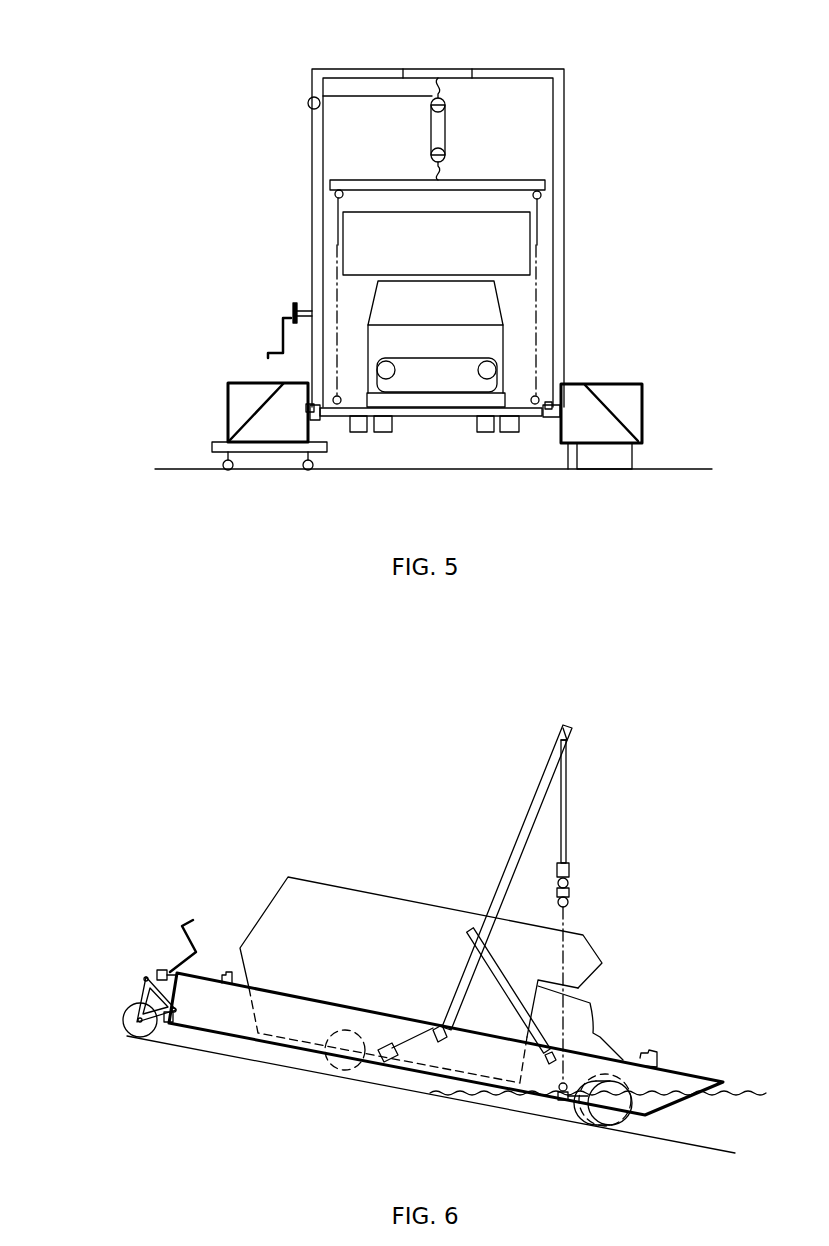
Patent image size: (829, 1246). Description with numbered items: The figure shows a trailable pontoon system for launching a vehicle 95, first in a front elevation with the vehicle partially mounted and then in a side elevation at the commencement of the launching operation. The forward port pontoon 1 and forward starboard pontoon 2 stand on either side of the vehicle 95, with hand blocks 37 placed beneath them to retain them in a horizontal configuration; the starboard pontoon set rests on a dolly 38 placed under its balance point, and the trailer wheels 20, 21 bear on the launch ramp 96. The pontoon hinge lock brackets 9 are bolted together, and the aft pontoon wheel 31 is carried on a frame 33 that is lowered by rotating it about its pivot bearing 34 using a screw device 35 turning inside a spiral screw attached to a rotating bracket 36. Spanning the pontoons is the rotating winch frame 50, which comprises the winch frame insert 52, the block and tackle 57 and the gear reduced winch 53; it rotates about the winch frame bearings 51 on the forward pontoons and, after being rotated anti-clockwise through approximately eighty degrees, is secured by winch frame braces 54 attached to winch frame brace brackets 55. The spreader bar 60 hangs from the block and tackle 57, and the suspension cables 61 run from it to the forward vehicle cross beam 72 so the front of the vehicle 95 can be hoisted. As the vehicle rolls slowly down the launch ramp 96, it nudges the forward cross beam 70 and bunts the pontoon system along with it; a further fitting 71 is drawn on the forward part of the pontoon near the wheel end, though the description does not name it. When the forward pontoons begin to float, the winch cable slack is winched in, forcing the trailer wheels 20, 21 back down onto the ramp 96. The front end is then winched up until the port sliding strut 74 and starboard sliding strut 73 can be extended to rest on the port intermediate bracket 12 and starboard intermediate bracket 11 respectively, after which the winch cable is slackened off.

In FIG. 5, the forward port pontoon 1 is at (623, 405).
In FIG. 5, the forward starboard pontoon 2 is at (245, 413).
In FIG. 6, the pontoon hinge lock bracket 9 is at (387, 1048).
In FIG. 5, the starboard intermediate bracket 11 is at (317, 418).
In FIG. 5, the port intermediate bracket 12 is at (555, 422).
In FIG. 5, the trailer wheel 20 is at (622, 462).
In FIG. 6, the trailer wheel 21 is at (618, 1120).
In FIG. 6, the aft pontoon wheel 31 is at (133, 1033).
In FIG. 6, the frame 33 is at (145, 997).
In FIG. 6, the pivot bearing 34 is at (168, 1023).
In FIG. 6, the screw device 35 is at (176, 968).
In FIG. 6, the rotating bracket 36 is at (160, 972).
In FIG. 5, the hand block 37 is at (576, 453).
In FIG. 5, the dolly 38 is at (283, 445).
In FIG. 5, the winch frame 50 is at (560, 148).
In FIG. 6, the winch frame 50 is at (503, 882).
In FIG. 6, the winch frame bearing 51 is at (437, 1025).
In FIG. 5, the winch frame insert 52 is at (453, 75).
In FIG. 5, the gear reduced winch 53 is at (295, 305).
In FIG. 6, the winch frame brace 54 is at (502, 982).
In FIG. 6, the winch frame brace bracket 55 is at (560, 1048).
In FIG. 5, the block and tackle 57 is at (447, 128).
In FIG. 6, the block and tackle 57 is at (570, 815).
In FIG. 5, the spreader bar 60 is at (395, 185).
In FIG. 6, the spreader bar 60 is at (572, 890).
In FIG. 5, the suspension cable 61 is at (335, 227).
In FIG. 6, the forward cross beam 70 is at (657, 1055).
In FIG. 6, the front bracket 71 is at (229, 972).
In FIG. 5, the forward vehicle cross beam 72 is at (463, 417).
In FIG. 6, the forward vehicle cross beam 72 is at (558, 1094).
In FIG. 5, the starboard sliding strut 73 is at (308, 405).
In FIG. 5, the port sliding strut 74 is at (552, 407).
In FIG. 6, the vehicle 95 is at (363, 917).
In FIG. 6, the launch ramp 96 is at (268, 1063).